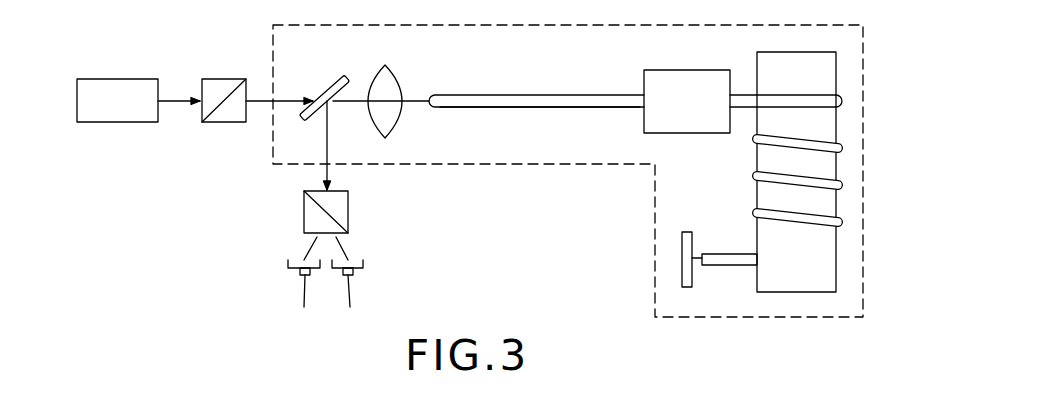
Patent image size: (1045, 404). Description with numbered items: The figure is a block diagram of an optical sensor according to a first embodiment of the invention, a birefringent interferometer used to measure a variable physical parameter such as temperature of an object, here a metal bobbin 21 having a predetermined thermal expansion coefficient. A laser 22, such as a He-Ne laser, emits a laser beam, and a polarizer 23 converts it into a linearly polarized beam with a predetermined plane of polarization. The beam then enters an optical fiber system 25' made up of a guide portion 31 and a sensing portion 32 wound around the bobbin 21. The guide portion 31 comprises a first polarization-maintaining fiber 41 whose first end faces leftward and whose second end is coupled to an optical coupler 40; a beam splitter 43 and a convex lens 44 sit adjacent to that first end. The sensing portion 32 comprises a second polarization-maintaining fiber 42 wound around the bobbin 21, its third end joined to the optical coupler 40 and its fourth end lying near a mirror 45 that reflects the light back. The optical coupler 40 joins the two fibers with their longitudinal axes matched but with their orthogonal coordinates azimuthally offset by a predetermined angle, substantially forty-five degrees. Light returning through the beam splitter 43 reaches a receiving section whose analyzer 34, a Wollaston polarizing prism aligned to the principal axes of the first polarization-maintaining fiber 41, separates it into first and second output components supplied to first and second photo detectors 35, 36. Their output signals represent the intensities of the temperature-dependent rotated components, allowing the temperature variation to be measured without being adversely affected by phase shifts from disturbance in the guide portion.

The bobbin 21 is at (757, 62).
The laser 22 is at (126, 79).
The polarizer 23 is at (223, 79).
The optical fiber system 25' is at (568, 171).
The guide portion 31 is at (516, 87).
The sensing portion 32 is at (793, 88).
The analyzer 34 is at (348, 210).
The first photo detector 35 is at (288, 263).
The second photo detector 36 is at (363, 262).
The optical coupler 40 is at (644, 72).
The first polarization-maintaining fiber 41 is at (553, 108).
The second polarization-maintaining fiber 42 is at (790, 110).
The beam splitter 43 is at (336, 78).
The convex lens 44 is at (390, 72).
The mirror 45 is at (688, 232).